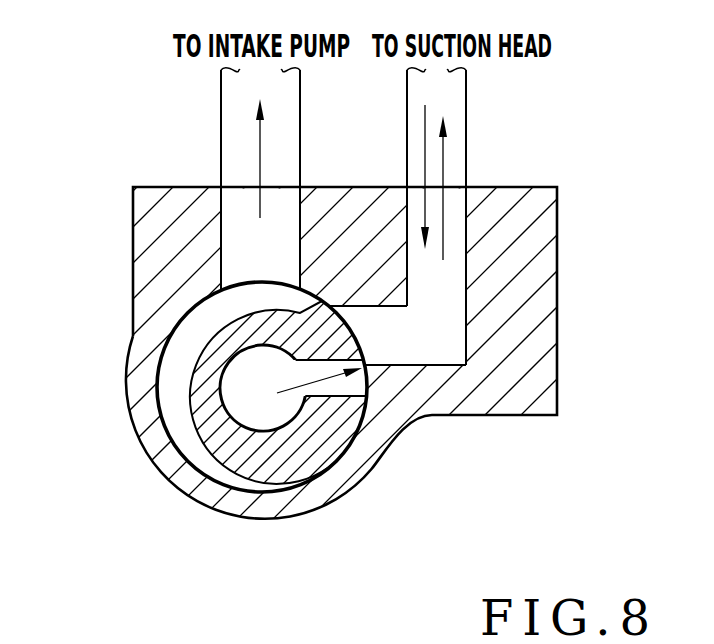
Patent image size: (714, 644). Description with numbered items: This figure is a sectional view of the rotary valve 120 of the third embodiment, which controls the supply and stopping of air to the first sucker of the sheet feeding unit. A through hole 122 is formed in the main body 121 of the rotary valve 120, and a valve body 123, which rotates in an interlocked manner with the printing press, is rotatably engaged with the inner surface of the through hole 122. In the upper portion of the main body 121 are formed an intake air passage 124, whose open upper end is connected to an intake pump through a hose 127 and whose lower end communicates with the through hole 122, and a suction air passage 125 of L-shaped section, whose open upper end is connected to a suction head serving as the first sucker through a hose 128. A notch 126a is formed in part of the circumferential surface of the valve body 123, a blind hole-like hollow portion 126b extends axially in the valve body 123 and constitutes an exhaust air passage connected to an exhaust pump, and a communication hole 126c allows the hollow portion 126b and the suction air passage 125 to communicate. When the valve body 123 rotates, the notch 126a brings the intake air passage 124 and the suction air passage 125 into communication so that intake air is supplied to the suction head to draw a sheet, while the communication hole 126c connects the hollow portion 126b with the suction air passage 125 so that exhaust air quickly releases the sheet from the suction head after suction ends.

The rotary valve 120 is at (560, 108).
The main body 121 is at (557, 215).
The through hole 122 is at (188, 320).
The valve body 123 is at (287, 460).
The intake air passage 124 is at (300, 222).
The suction air passage 125 is at (466, 222).
The notch 126a is at (168, 396).
The hollow portion 126b is at (250, 406).
The communication hole 126c is at (362, 442).
The hose 127 is at (221, 112).
The hose 128 is at (467, 104).